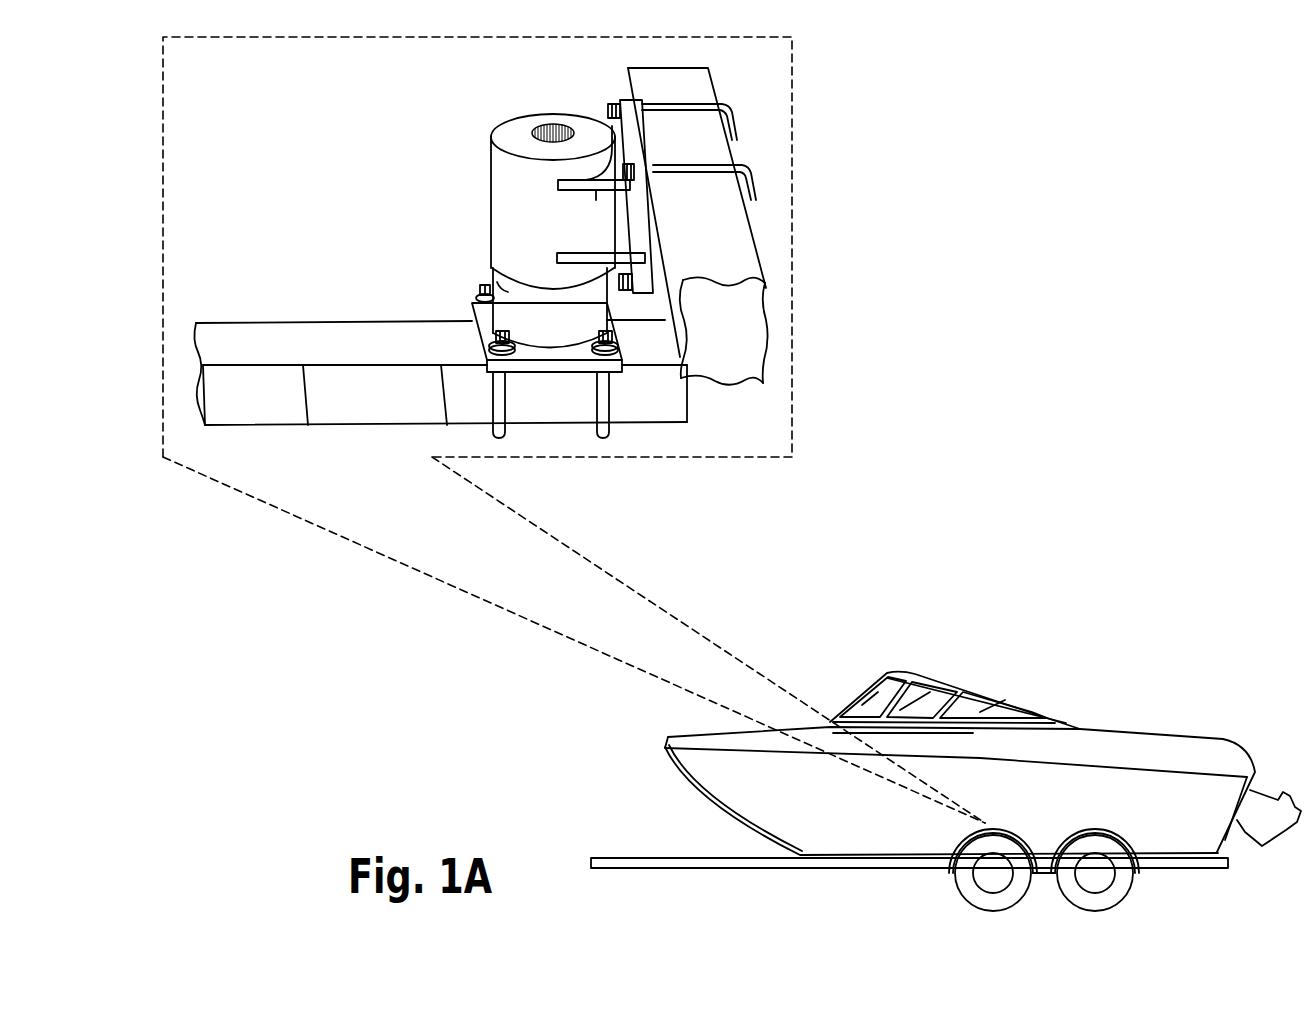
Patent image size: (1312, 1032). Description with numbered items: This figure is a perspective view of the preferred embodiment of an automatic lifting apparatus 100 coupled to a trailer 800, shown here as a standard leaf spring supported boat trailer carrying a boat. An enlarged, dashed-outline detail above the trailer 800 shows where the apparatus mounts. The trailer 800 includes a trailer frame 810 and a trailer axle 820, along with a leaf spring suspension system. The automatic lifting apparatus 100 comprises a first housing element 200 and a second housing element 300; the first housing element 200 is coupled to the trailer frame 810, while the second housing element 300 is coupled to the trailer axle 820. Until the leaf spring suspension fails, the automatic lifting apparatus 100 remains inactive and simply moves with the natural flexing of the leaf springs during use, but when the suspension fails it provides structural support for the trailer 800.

The automatic lifting apparatus 100 is at (492, 128).
The first housing element 200 is at (556, 117).
The second housing element 300 is at (500, 286).
The trailer 800 is at (688, 864).
The trailer frame 810 is at (725, 240).
The trailer axle 820 is at (272, 340).